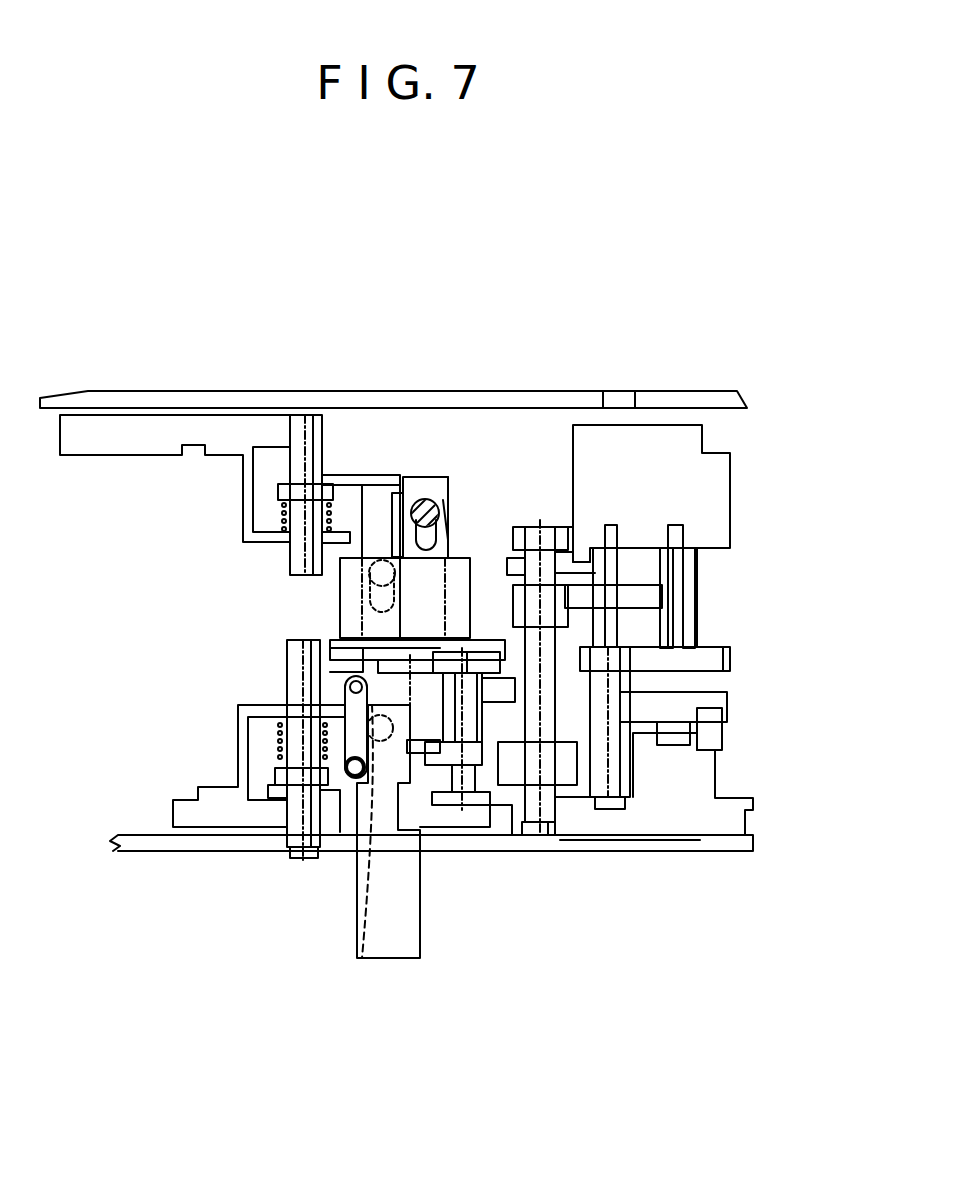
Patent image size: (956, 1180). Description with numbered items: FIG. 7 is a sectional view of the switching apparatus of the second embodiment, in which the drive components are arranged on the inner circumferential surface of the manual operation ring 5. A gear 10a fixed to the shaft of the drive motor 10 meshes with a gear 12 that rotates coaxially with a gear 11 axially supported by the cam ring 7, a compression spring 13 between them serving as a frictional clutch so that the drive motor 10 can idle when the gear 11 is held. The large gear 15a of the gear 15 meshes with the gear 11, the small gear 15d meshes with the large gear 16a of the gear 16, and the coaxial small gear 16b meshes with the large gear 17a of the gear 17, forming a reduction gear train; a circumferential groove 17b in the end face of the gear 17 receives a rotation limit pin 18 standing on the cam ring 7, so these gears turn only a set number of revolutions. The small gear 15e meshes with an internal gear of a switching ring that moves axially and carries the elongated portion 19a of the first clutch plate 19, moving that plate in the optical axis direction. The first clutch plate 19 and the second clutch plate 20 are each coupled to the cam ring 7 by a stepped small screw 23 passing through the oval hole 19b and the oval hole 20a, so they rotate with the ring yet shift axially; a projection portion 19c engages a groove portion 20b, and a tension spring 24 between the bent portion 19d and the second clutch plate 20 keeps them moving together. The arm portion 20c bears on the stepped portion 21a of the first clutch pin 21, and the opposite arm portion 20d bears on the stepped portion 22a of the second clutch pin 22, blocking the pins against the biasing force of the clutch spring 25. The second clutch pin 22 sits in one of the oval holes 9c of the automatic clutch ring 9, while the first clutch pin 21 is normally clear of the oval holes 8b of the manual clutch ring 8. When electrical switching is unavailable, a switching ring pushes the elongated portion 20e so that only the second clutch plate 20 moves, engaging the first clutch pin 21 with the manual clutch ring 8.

The manual operation ring 5 is at (730, 497).
The cam ring 7 is at (98, 430).
The manual clutch ring 8 is at (663, 405).
The oval holes 8b is at (620, 405).
The automatic clutch ring 9 is at (720, 845).
The oval holes 9c is at (620, 840).
The drive motor 10 is at (460, 563).
The gear 10a is at (340, 660).
The gear 11 is at (482, 765).
The gear 12 is at (515, 688).
The compression spring 13 is at (470, 795).
The gear 15 is at (540, 800).
The large gear 15a is at (560, 785).
The small gear 15d is at (600, 572).
The small gear 15e is at (575, 530).
The gear 16 is at (693, 612).
The large gear 16a is at (697, 592).
The small gear 16b is at (610, 700).
The gear 17 is at (673, 663).
The large gear 17a is at (733, 662).
The circumferential groove 17b is at (730, 698).
The rotation limit pin 18 is at (727, 728).
The first clutch plate 19 is at (443, 480).
The elongated portion 19a is at (448, 480).
The oval hole 19b is at (448, 518).
The projection portion 19c is at (428, 500).
The bent portion 19d is at (360, 958).
The second clutch plate 20 is at (372, 497).
The oval hole 20a is at (360, 603).
The groove portion 20b is at (393, 500).
The arm portion 20c is at (345, 475).
The arm portion 20d is at (345, 790).
The elongated portion 20e is at (408, 955).
The first clutch pin 21 is at (300, 420).
The stepped portion 21a is at (278, 492).
The second clutch pin 22 is at (290, 800).
The stepped portion 22a is at (275, 780).
The stepped small screw 23 is at (425, 520).
The tension spring 24 is at (280, 745).
The clutch spring 25 is at (285, 530).